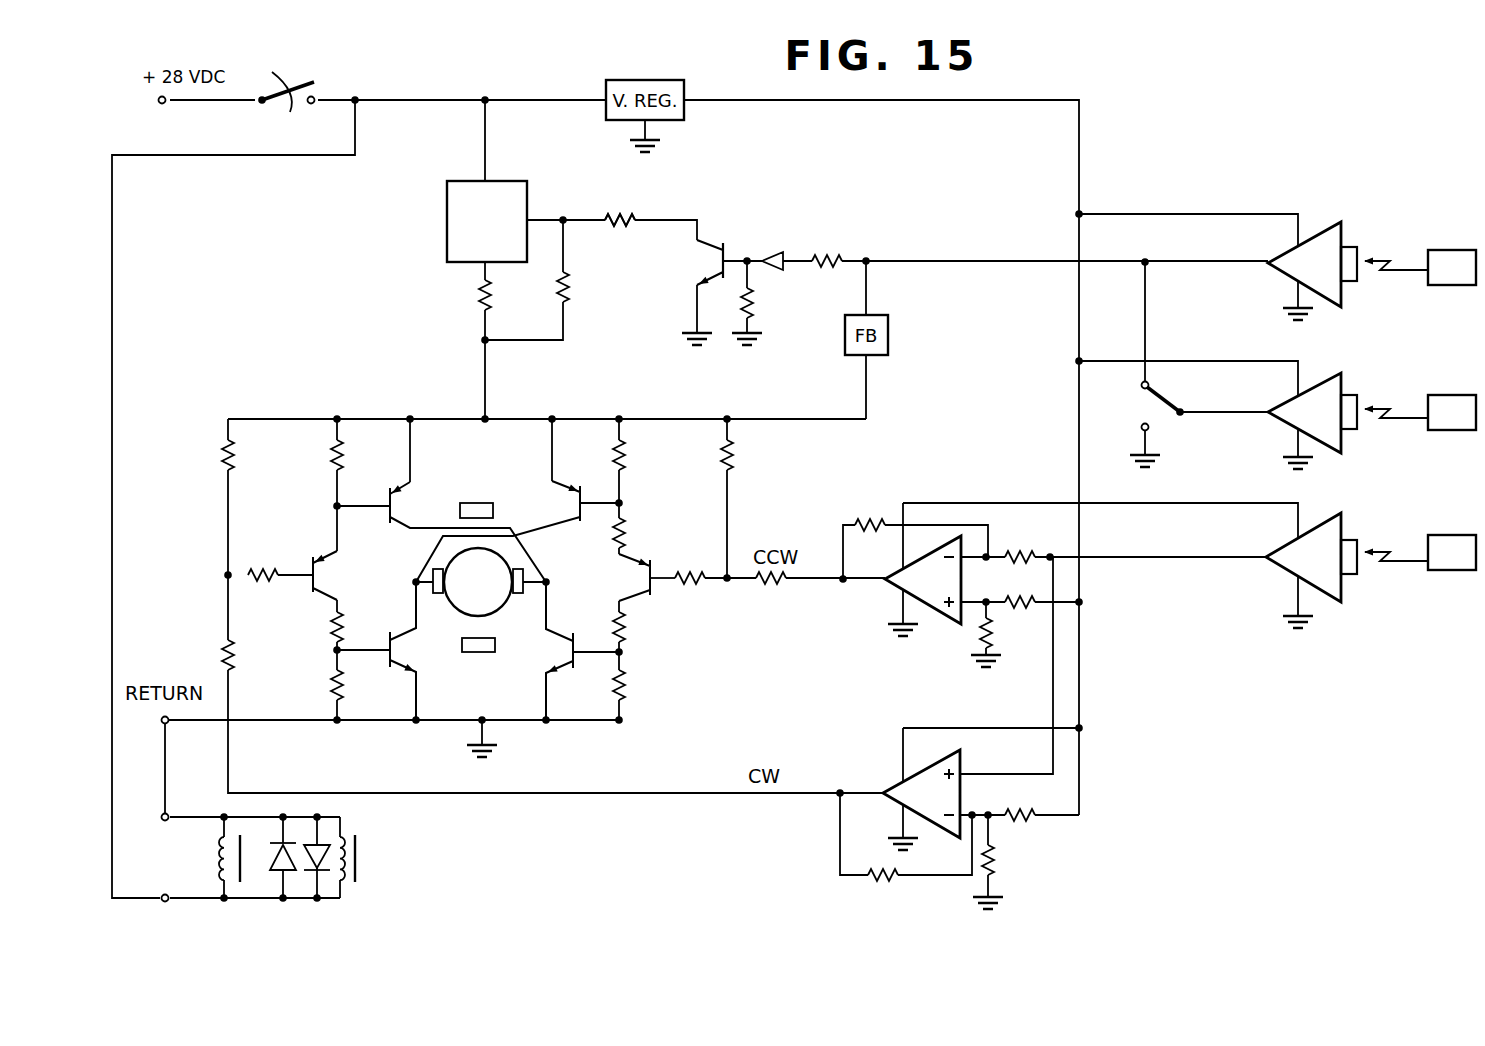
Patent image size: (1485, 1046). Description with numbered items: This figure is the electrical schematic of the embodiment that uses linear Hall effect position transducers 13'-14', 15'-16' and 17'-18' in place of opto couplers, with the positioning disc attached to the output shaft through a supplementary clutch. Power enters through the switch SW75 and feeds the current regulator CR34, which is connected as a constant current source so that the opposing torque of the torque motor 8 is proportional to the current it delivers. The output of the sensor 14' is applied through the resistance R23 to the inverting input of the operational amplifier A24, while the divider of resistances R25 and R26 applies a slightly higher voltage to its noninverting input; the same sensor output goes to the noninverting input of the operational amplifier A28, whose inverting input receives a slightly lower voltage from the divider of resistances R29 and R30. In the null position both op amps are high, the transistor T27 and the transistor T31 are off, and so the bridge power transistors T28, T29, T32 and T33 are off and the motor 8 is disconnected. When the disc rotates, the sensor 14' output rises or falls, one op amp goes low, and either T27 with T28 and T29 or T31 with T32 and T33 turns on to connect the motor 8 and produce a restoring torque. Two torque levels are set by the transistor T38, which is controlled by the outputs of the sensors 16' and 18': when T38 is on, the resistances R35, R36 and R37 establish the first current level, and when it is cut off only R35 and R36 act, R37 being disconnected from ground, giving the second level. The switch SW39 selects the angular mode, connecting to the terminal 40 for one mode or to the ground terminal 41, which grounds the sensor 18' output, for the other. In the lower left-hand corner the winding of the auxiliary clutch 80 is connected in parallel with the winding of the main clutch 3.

The power switch SW75 is at (328, 86).
The current regulator CR34 is at (447, 220).
The resistance R37 is at (626, 216).
The resistance R36 is at (575, 292).
The resistance R35 is at (478, 298).
The transistor T38 is at (715, 246).
The Hall effect transducer element 15' is at (1422, 244).
The sensor 16' is at (1333, 273).
The Hall effect transducer element 17' is at (1424, 389).
The sensor 18' is at (1333, 421).
The Hall effect transducer element 13' is at (1424, 531).
The sensor 14' is at (1330, 564).
The terminal 40 is at (1141, 384).
The ground terminal 41 is at (1141, 428).
The switch SW39 is at (1160, 423).
The operational amplifier A24 is at (897, 586).
The resistance R23 is at (1020, 551).
The resistance R25 is at (1023, 585).
The resistance R26 is at (980, 636).
The operational amplifier A28 is at (888, 786).
The resistance R29 is at (1020, 814).
The resistance R30 is at (996, 865).
The bridge power transistor T32 is at (386, 524).
The bridge power transistor T28 is at (578, 524).
The transistor T31 is at (310, 596).
The transistor T27 is at (653, 600).
The bridge power transistor T33 is at (388, 670).
The bridge power transistor T29 is at (578, 670).
The torque motor 8 is at (506, 597).
The auxiliary clutch 80 is at (220, 859).
The main clutch 3 is at (357, 886).